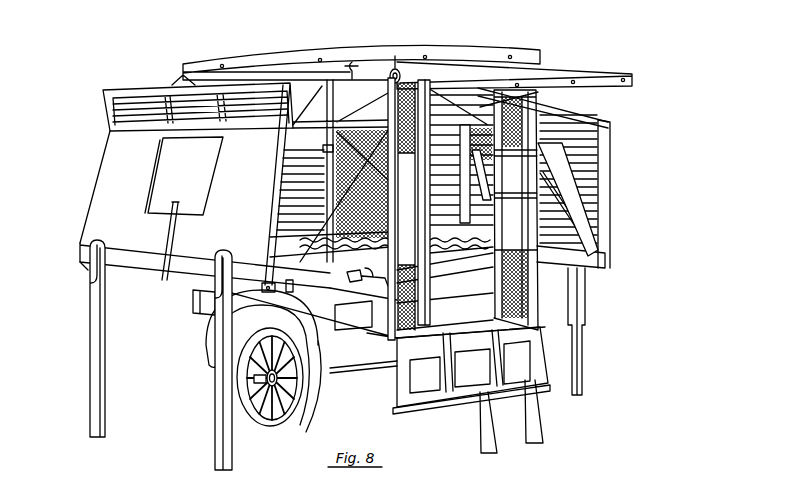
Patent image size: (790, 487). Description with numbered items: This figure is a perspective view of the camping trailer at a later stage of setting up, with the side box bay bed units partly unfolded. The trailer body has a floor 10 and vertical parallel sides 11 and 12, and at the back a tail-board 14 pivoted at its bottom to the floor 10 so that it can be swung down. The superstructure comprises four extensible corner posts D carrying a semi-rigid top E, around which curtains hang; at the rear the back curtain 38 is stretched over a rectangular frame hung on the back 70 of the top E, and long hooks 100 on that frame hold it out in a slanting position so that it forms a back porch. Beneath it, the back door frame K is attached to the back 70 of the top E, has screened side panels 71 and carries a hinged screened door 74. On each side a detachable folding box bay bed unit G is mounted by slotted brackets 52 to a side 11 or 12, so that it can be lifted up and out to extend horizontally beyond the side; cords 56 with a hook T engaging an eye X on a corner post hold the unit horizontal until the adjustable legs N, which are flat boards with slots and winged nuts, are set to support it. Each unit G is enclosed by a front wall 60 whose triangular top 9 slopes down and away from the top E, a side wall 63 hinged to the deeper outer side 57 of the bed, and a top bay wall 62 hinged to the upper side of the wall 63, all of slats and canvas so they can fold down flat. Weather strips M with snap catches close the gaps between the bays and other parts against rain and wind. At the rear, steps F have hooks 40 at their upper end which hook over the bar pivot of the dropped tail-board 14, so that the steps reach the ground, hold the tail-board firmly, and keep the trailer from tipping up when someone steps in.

The back of the top 70 is at (277, 61).
The semi-rigid top E is at (388, 53).
The back curtain 38 is at (633, 79).
The long hooks 100 is at (575, 108).
The top bay wall 62 is at (120, 106).
The side wall 63 is at (633, 146).
The weather strips M is at (270, 231).
The hook T is at (380, 153).
The eye X is at (344, 196).
The outer side of bed 57 is at (205, 265).
The box bay bed unit G is at (342, 261).
The side bay wall 60 is at (433, 232).
The vertical side 11 is at (300, 292).
The extensible corner posts D is at (388, 270).
The bracket 52 is at (367, 277).
The adjustable legs N is at (217, 378).
The top of wall 9 is at (477, 177).
The back door frame K is at (425, 298).
The vertical side 12 is at (445, 295).
The floor 10 is at (471, 327).
The screened door 74 is at (530, 294).
The cords 56 is at (568, 213).
The screened side panels 71 is at (587, 279).
The hooks 40 is at (488, 360).
The tail-board 14 is at (517, 362).
The steps F is at (433, 402).